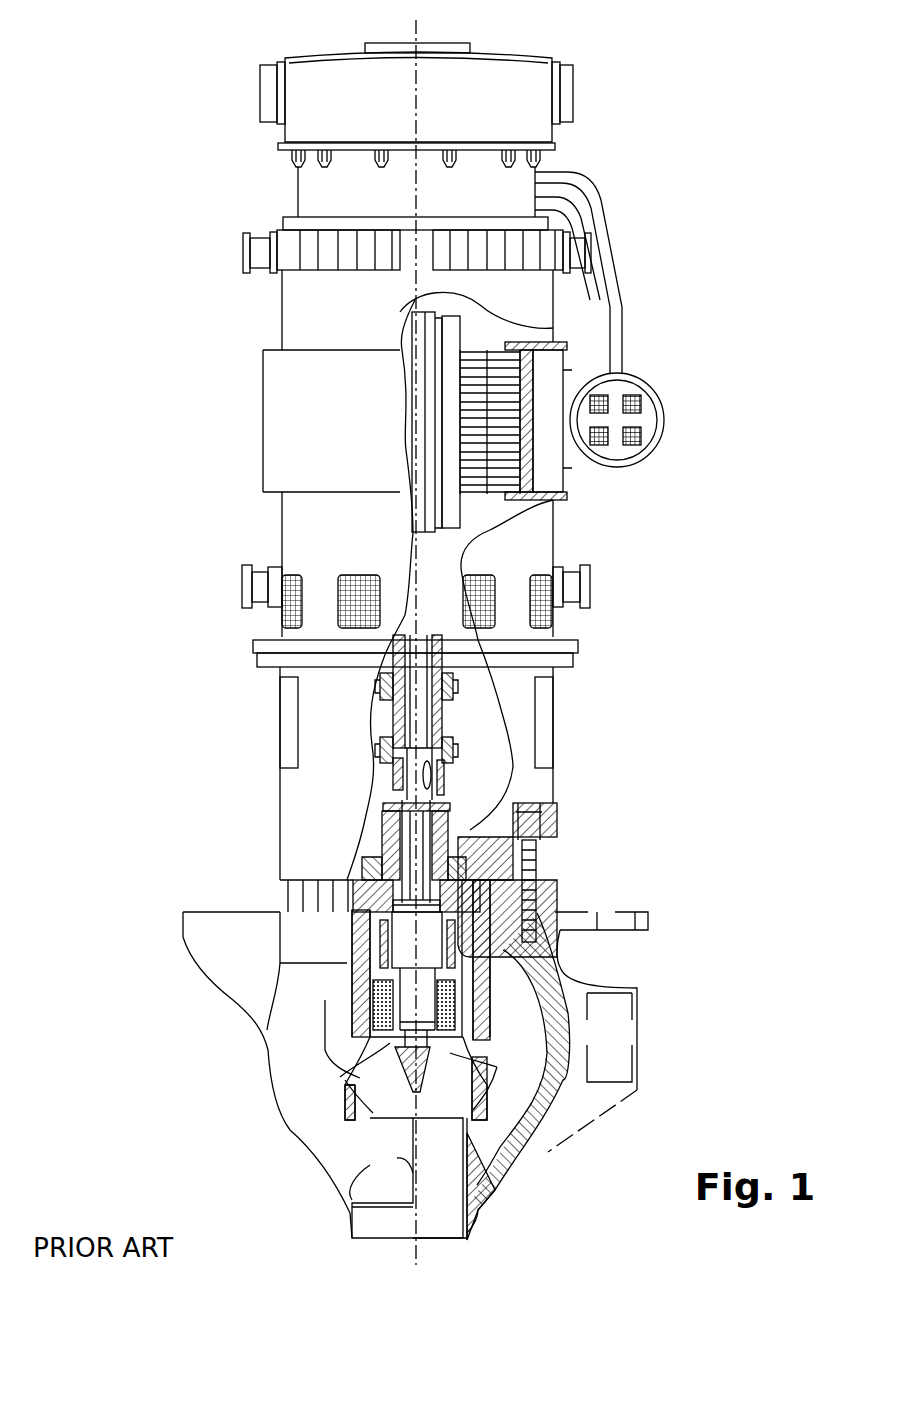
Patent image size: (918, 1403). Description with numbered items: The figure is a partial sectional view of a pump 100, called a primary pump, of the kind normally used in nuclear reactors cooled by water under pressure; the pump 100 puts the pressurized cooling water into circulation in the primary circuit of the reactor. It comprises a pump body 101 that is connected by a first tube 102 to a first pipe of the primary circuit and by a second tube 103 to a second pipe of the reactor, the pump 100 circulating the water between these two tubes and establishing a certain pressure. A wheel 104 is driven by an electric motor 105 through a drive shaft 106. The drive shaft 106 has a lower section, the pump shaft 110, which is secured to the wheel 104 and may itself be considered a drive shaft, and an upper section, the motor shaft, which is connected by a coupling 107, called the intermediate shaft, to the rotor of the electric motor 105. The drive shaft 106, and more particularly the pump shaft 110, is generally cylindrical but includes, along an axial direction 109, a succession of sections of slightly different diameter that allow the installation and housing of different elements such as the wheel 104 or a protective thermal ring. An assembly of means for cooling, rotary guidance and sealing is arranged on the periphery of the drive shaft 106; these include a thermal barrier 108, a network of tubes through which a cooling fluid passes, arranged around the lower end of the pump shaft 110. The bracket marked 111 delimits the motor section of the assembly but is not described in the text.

The pump 100 is at (652, 311).
The pump body 101 is at (540, 1133).
The first tube 102 is at (472, 1248).
The second tube 103 is at (618, 1025).
The wheel 104 is at (440, 1080).
The electric motor 105 is at (507, 383).
The drive shaft 106 is at (408, 833).
The coupling 107 is at (437, 717).
The thermal barrier 108 is at (372, 998).
The axial direction 109 is at (413, 1157).
The pump shaft 110 is at (390, 1077).
The motor section 111 is at (402, 633).